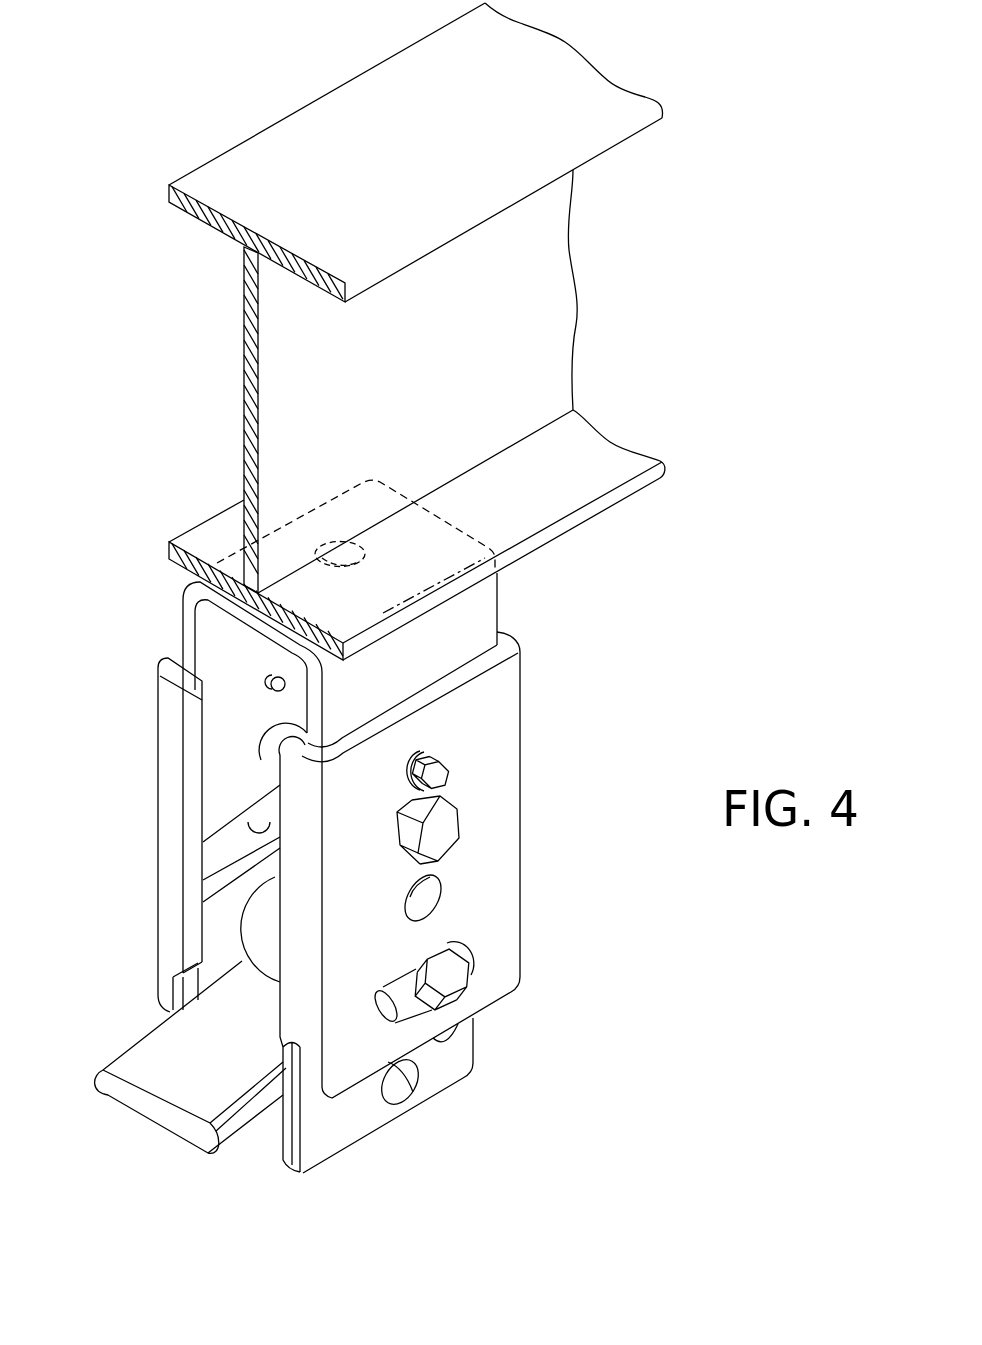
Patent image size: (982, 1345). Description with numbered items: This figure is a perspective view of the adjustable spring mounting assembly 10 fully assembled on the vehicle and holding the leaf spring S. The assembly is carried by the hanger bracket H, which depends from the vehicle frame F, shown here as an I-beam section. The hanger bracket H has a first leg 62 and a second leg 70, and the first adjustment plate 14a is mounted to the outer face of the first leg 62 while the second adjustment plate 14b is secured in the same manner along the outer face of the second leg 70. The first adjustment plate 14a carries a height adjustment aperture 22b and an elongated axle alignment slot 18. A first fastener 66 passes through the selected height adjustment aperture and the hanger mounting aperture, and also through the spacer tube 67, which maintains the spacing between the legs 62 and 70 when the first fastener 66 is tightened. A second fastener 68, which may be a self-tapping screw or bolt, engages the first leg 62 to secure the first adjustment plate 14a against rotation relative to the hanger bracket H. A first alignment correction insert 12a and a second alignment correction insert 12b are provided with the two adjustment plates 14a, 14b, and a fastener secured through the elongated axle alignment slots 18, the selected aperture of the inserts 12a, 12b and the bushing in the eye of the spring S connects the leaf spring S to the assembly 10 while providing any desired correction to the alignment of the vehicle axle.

The vehicle frame F is at (540, 340).
The adjustable spring mounting assembly 10 is at (718, 624).
The first leg 62 is at (468, 622).
The first adjustment plate 14a is at (513, 720).
The second adjustment plate 14b is at (157, 780).
The second fastener 68 is at (438, 777).
The first fastener 66 is at (443, 832).
The height adjustment aperture 22b is at (440, 898).
The elongated axle alignment slot 18 is at (467, 957).
The first alignment correction insert 12a is at (347, 1137).
The second alignment correction insert 12b is at (217, 928).
The hanger bracket H is at (212, 623).
The second leg 70 is at (223, 652).
The spacer tube 67 is at (265, 747).
The leaf spring S is at (150, 1051).